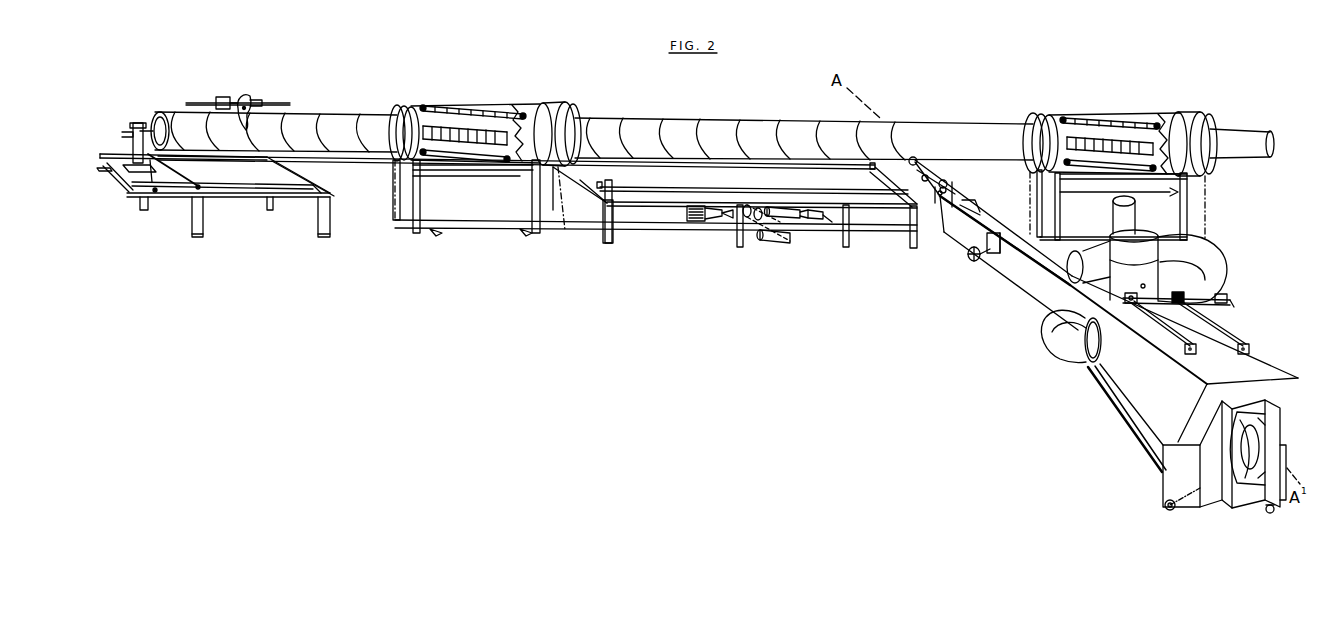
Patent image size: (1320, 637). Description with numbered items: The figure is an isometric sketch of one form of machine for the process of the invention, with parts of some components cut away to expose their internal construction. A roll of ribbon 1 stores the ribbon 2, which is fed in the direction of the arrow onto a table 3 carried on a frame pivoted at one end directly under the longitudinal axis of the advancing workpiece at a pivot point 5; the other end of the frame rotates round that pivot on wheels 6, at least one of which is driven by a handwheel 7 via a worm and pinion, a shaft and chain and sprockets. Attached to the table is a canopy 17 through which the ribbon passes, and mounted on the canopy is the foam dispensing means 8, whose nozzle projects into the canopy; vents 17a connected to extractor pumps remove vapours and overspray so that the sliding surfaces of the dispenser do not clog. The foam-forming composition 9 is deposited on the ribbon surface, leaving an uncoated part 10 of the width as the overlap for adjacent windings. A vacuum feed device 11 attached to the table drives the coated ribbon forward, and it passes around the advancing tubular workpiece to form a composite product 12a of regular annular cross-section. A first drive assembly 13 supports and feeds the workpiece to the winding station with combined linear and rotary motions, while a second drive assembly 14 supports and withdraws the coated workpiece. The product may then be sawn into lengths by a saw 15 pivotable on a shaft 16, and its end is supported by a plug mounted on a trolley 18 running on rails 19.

The roll of ribbon 1 is at (1267, 461).
The ribbon 2 is at (1257, 432).
The table 3 is at (968, 176).
The pivot point 5 is at (943, 194).
The wheels 6 is at (1270, 513).
The handwheel 7 is at (969, 258).
The foam dispensing means 8 is at (1170, 298).
The foam-forming composition 9 is at (1003, 237).
The uncoated part of ribbon width 10 is at (1033, 265).
The vacuum feed device 11 is at (944, 152).
The composite product 12a is at (910, 130).
The first drive assembly 13 is at (1108, 112).
The second drive assembly 14 is at (460, 108).
The saw 15 is at (243, 106).
The shaft 16 is at (202, 103).
The canopy 17 is at (1253, 368).
The vents 17a is at (1147, 212).
The trolley 18 is at (163, 177).
The rails 19 is at (283, 187).